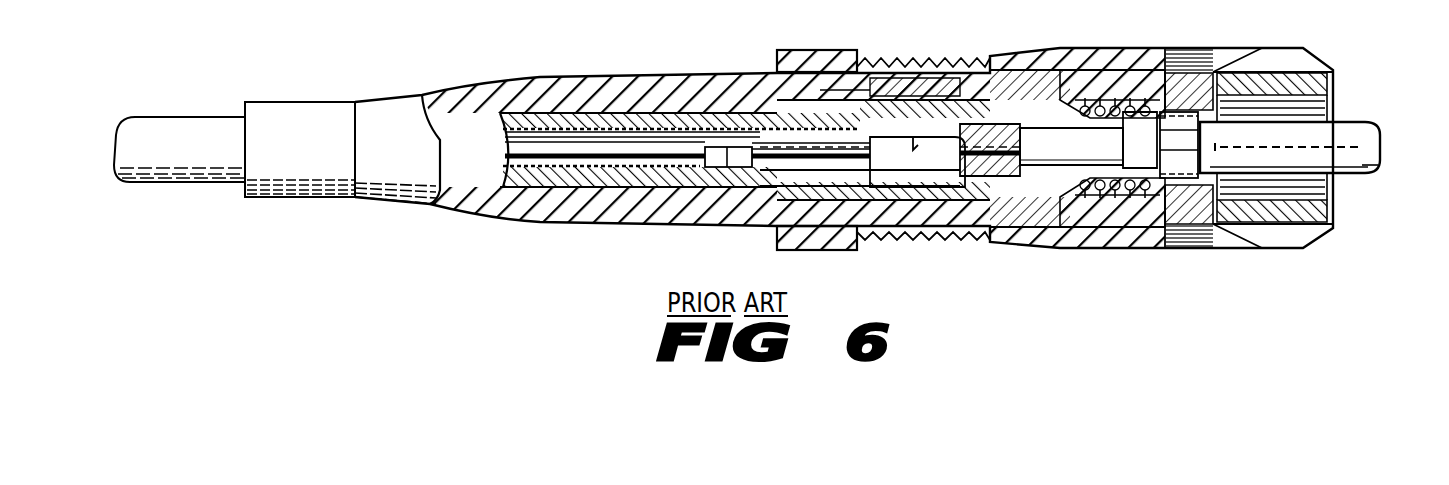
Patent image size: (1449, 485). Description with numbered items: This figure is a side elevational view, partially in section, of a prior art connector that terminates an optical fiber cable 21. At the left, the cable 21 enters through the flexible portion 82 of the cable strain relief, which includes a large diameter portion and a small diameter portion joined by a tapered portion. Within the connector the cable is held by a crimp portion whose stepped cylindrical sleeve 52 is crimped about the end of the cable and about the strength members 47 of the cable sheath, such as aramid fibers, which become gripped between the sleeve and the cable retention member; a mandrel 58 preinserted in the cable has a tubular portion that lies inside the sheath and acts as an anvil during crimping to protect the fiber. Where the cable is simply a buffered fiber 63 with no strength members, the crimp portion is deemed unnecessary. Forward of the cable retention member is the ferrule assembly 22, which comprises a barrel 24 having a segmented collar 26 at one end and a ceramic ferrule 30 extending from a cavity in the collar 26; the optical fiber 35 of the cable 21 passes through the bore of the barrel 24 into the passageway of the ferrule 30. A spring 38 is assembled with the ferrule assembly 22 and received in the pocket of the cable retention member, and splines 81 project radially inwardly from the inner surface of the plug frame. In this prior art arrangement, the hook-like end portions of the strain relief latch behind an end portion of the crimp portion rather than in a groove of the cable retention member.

The optical fiber cable 21 is at (180, 124).
The ferrule assembly 22 is at (1388, 145).
The barrel 24 is at (1036, 168).
The segmented collar 26 is at (1180, 180).
The ferrule 30 is at (1345, 175).
The optical fiber 35 is at (1342, 143).
The spring 38 is at (1093, 98).
The strength members 47 is at (565, 170).
The stepped cylindrical sleeve 52 is at (912, 76).
The mandrel 58 is at (735, 168).
The buffered fiber 63 is at (998, 122).
The splines 81 is at (1182, 78).
The flexible portion 82 is at (490, 84).